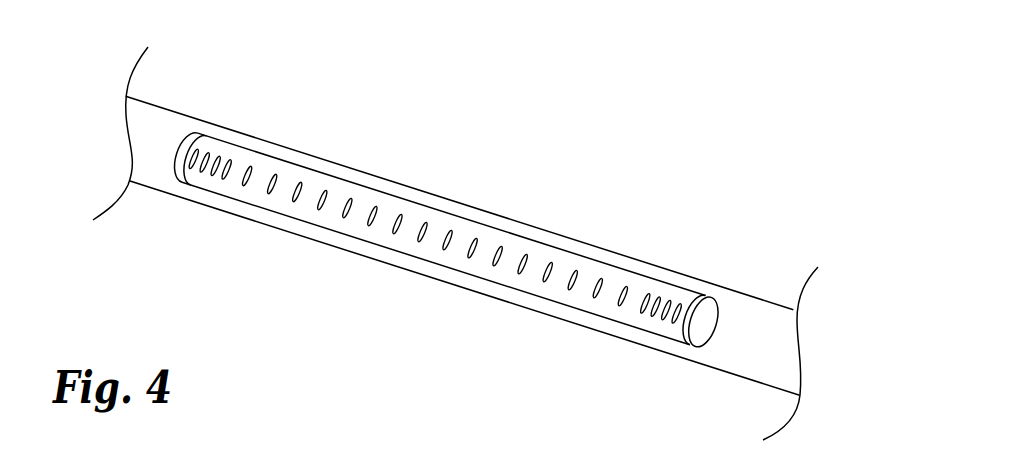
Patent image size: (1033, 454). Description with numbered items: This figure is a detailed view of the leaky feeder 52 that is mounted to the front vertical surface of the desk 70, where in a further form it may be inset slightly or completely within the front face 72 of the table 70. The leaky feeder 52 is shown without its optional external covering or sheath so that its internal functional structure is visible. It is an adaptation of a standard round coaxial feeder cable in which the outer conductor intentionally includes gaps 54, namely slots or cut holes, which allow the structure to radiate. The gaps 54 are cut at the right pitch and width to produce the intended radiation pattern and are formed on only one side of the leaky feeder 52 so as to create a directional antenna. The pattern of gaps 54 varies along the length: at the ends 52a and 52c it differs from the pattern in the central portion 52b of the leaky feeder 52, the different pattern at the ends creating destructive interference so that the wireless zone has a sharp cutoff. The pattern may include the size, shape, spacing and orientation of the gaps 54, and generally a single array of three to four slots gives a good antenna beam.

The desk 70 is at (618, 188).
The front face 72 is at (142, 132).
The leaky feeder 52 is at (583, 306).
The end of the leaky feeder 52a is at (215, 146).
The second (middle) group of perforations 52b is at (463, 235).
The end of the leaky feeder 52c is at (670, 292).
The gaps 54 is at (468, 258).